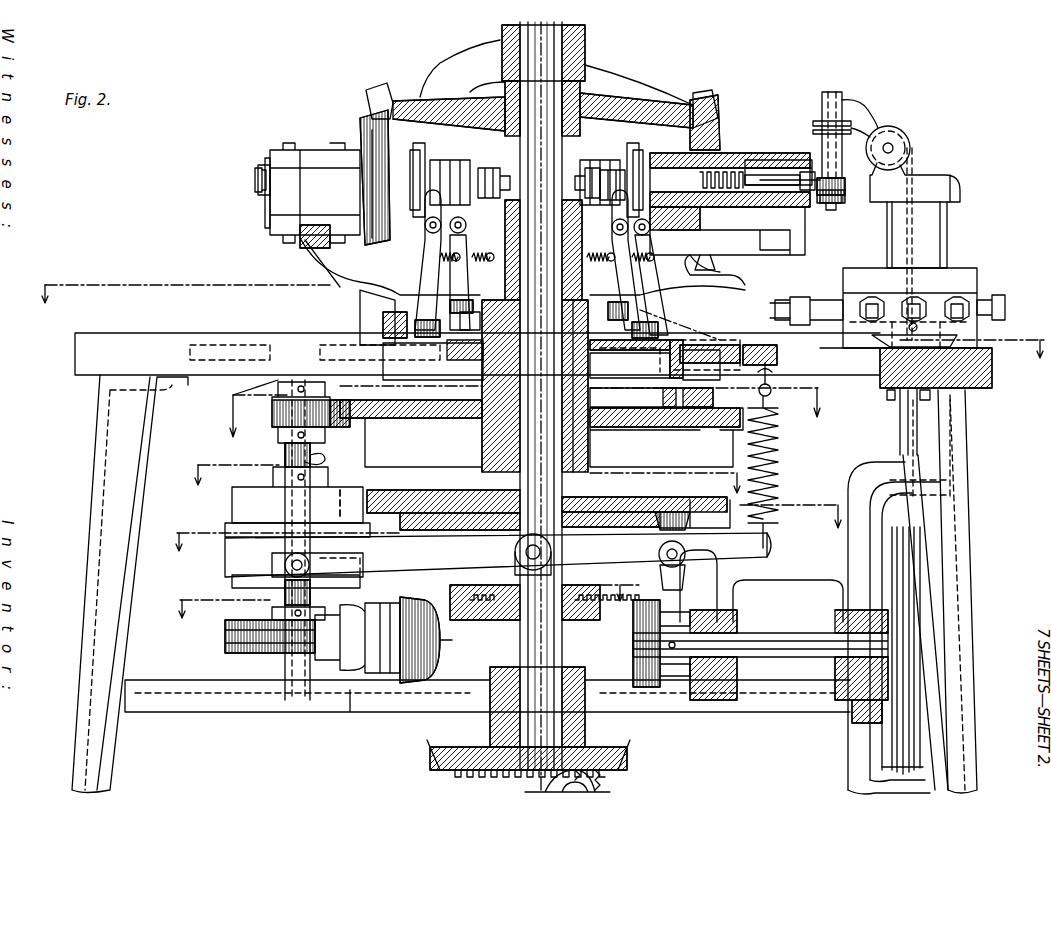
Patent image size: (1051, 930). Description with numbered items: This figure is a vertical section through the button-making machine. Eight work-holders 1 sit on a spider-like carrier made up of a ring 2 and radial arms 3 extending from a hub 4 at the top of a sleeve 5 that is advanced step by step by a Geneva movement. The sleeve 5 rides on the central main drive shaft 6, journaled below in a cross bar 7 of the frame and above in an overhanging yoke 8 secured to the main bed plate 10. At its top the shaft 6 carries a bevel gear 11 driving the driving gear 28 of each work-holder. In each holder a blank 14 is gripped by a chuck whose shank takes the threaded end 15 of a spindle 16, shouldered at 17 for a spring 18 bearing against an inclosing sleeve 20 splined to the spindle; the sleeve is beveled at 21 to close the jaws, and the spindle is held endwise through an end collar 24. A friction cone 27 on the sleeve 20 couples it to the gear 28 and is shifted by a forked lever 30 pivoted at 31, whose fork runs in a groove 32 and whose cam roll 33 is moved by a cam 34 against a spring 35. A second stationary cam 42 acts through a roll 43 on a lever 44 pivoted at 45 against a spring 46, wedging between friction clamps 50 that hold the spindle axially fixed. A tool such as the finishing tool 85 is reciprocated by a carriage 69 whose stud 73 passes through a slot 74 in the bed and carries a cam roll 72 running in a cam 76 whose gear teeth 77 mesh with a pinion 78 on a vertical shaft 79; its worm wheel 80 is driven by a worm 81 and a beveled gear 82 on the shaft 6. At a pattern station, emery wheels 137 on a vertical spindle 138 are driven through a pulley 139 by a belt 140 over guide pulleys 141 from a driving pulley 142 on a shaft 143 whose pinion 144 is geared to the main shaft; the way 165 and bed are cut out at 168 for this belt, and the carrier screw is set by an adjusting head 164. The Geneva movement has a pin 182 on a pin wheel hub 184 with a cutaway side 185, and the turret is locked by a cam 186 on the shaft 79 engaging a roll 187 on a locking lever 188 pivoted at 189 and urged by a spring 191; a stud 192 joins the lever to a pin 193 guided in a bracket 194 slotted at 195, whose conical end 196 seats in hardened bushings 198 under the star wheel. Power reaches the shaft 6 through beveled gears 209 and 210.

The work-holder 1 is at (305, 160).
The ring 2 is at (800, 246).
The radial arm 3 is at (715, 270).
The hub 4 is at (562, 243).
The sleeve 5 is at (325, 262).
The main drive shaft 6 is at (562, 446).
The cross bar 7 is at (630, 712).
The overhanging yoke 8 is at (586, 47).
The main bed plate 10 is at (992, 372).
The bevel gear 11 is at (447, 103).
The blank 14 is at (838, 236).
The threaded end 15 is at (258, 168).
The spindle 16 is at (456, 473).
The shoulder 17 is at (495, 517).
The spring 18 is at (750, 143).
The inclosing sleeve 20 is at (798, 160).
The internal bevel 21 is at (808, 170).
The end collar 24 is at (497, 170).
The friction cone 27 is at (428, 160).
The driving gear 28 is at (365, 125).
The forked lever 30 is at (618, 175).
The pivot 31 is at (655, 258).
The groove 32 is at (440, 162).
The cam roll 33 is at (415, 340).
The cam 34 is at (470, 335).
The spring 35 is at (445, 240).
The second stationary cam 42 is at (680, 312).
The roll 43 is at (655, 290).
The lever 44 is at (355, 288).
The pivot 45 is at (440, 250).
The spring 46 is at (420, 270).
The friction clamp 50 is at (380, 318).
The carriage 69 is at (775, 318).
The cam roll 72 is at (651, 397).
The stud 73 is at (723, 355).
The slot 74 is at (674, 360).
The cam 76 is at (658, 420).
The gear teeth 77 is at (772, 403).
The pinion 78 is at (278, 418).
The vertical shaft 79 is at (276, 458).
The worm wheel 80 is at (225, 638).
The worm 81 is at (350, 658).
The beveled gear 82 is at (440, 658).
The tool 85 is at (470, 618).
The emery wheels 137 is at (847, 188).
The vertical spindle 138 is at (835, 86).
The pulley 139 is at (842, 122).
The belt 140 is at (876, 120).
The guide pulleys 141 is at (912, 150).
The driving pulley 142 is at (905, 733).
The shaft 143 is at (790, 634).
The pinion 144 is at (655, 662).
The adjusting head 164 is at (1005, 307).
The dovetail way 165 is at (818, 300).
The cut-out opening 168 is at (935, 400).
The pin 182 is at (340, 495).
The hub 184 is at (297, 495).
The cutaway side 185 is at (228, 530).
The cam 186 is at (240, 582).
The roll 187 is at (285, 558).
The locking lever 188 is at (788, 545).
The pivot 189 is at (515, 550).
The spring 191 is at (778, 457).
The stud 192 is at (659, 553).
The pin 193 is at (683, 588).
The bracket 194 is at (718, 568).
The slot 195 is at (788, 601).
The conical end 196 is at (680, 510).
The hardened bushings 198 is at (385, 505).
The beveled gear 209 is at (627, 755).
The beveled gear 210 is at (600, 784).